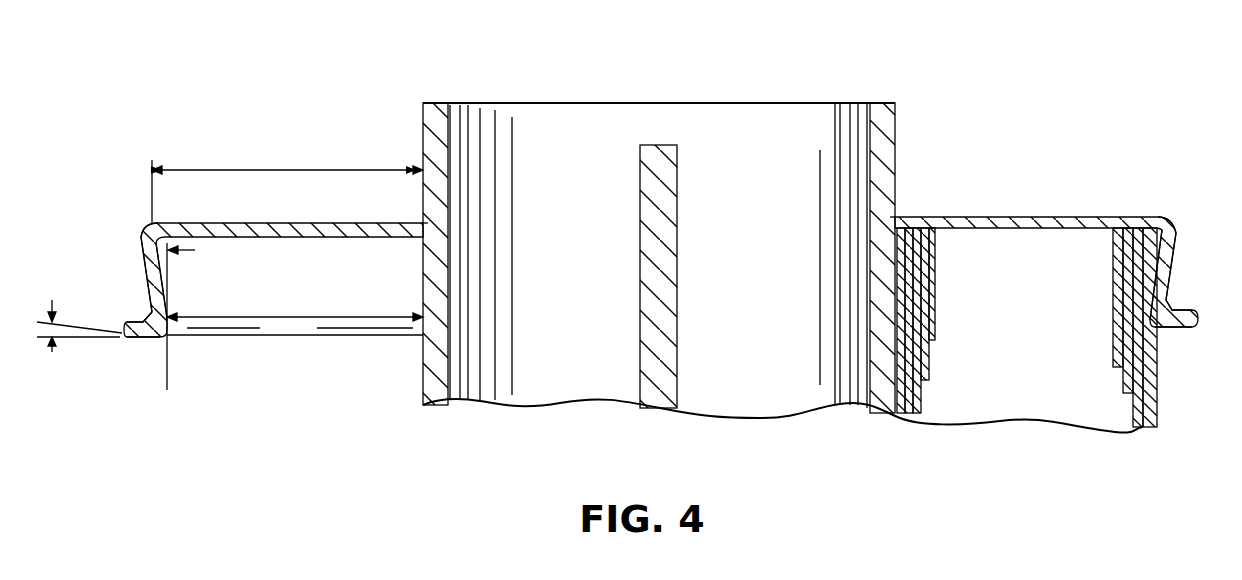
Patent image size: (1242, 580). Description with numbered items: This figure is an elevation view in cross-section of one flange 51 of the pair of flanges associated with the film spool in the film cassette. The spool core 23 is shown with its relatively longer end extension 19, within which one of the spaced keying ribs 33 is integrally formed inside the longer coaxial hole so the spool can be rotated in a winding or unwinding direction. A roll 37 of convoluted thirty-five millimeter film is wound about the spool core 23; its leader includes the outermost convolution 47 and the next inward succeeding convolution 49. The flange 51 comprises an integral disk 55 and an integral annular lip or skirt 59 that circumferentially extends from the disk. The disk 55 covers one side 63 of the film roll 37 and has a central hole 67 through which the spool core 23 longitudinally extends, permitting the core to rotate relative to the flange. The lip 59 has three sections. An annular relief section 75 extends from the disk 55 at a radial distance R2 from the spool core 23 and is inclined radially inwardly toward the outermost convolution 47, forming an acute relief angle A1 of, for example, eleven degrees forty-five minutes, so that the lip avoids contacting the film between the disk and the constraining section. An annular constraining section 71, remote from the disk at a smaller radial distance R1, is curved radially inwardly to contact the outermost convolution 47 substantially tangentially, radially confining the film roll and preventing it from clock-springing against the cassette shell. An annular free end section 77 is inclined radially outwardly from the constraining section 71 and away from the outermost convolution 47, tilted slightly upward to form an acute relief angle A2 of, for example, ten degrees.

The longer opposite end extension 19 is at (437, 103).
The spool core 23 is at (444, 356).
The keying rib 33 is at (677, 200).
The roll of convoluted film 37 is at (1013, 373).
The outermost convolution 47 is at (166, 382).
The next inward succeeding convolution 49 is at (1157, 404).
The flange 51 is at (140, 238).
The disk 55 is at (340, 223).
The annular lip 59 is at (142, 253).
The side of the film roll 63 is at (1122, 217).
The central hole 67 is at (428, 223).
The annular constraining section 71 is at (150, 313).
The annular relief section 75 is at (150, 287).
The annular free end section 77 is at (128, 338).
The predetermined radial distance R1 is at (306, 322).
The predetermined radial distance R2 is at (275, 178).
The acute relief angle A1 is at (195, 250).
The acute relief angle A2 is at (52, 355).